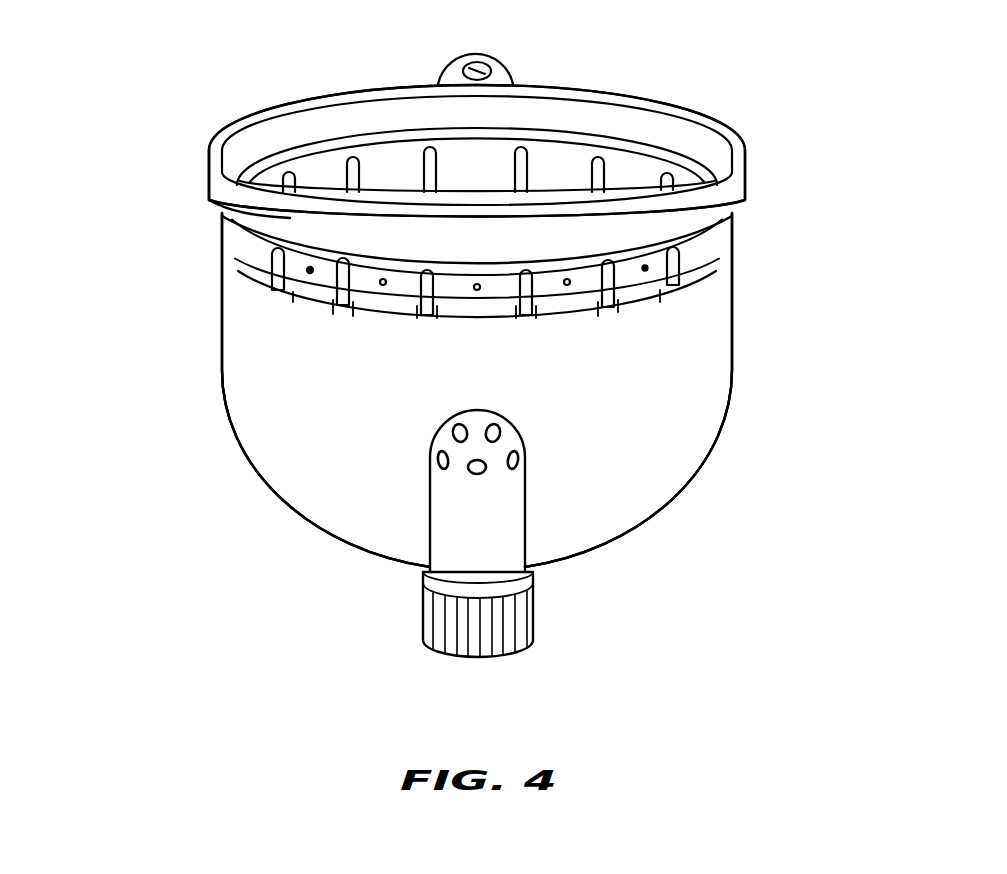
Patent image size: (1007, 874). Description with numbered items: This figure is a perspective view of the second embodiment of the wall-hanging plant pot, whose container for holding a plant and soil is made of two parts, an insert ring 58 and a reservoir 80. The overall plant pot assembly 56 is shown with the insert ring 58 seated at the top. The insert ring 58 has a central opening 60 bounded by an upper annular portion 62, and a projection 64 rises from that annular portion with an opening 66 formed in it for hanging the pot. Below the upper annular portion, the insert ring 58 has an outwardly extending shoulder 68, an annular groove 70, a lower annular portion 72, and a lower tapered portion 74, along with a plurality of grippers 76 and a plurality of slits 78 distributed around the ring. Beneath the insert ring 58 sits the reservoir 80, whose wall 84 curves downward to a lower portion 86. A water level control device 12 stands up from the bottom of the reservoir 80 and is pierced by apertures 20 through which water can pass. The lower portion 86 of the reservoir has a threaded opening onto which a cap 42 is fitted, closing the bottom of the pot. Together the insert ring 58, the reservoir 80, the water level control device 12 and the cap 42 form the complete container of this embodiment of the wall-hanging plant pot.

The water level control device 12 is at (492, 528).
The apertures in stem 20 is at (519, 463).
The cap 42 is at (403, 619).
The strainer assembly 56 is at (120, 314).
The insert ring 58 is at (813, 197).
The central opening 60 is at (606, 123).
The upper annular portion 62 is at (748, 183).
The projection 64 is at (497, 62).
The opening 66 is at (463, 68).
The outwardly extending shoulder 68 is at (218, 214).
The annular groove 70 is at (252, 236).
The lower annular portion 72 is at (268, 256).
The lower tapered portion 74 is at (693, 272).
The grippers 76 is at (668, 283).
The slits 78 is at (353, 309).
The reservoir 80 is at (813, 352).
The wall 84 is at (734, 358).
The lower portion 86 is at (573, 560).